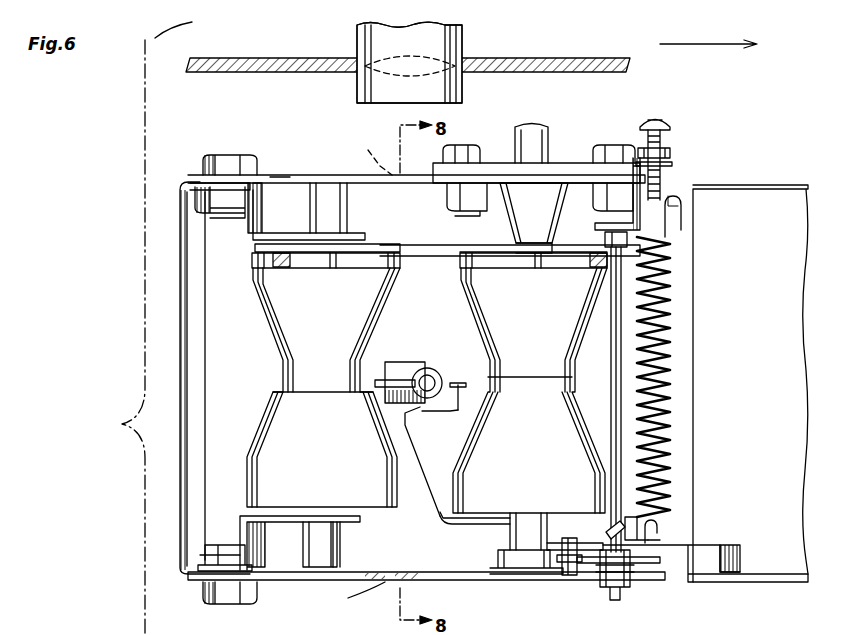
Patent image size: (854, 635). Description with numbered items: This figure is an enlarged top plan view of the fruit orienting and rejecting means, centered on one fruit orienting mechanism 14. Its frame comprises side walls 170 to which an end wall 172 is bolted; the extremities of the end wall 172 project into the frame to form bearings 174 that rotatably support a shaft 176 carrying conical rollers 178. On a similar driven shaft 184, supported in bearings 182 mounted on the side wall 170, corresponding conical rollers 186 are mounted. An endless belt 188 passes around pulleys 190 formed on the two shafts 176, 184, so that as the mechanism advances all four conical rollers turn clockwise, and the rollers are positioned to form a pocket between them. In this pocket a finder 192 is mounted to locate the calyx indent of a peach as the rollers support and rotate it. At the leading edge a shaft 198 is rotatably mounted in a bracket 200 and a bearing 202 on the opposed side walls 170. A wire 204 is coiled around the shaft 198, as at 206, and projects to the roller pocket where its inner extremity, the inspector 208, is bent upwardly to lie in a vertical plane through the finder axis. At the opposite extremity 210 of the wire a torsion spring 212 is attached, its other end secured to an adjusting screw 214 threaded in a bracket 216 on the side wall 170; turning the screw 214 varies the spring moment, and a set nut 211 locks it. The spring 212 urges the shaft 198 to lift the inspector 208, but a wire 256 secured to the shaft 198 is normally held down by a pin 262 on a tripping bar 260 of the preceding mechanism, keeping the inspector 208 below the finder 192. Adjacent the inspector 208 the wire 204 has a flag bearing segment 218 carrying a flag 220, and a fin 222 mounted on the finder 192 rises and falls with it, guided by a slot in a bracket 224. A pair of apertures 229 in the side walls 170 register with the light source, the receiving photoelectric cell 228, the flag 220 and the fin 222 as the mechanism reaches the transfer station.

The fruit orienting mechanism 14 is at (755, 179).
The side walls 170 is at (340, 176).
The end wall 172 is at (195, 378).
The bearings 174 is at (340, 233).
The shaft 176 is at (337, 552).
The conical rollers 178 is at (398, 302).
The bearings 182 is at (565, 183).
The driven shaft 184 is at (518, 130).
The conical rollers 186 is at (470, 312).
The endless belt 188 is at (433, 250).
The pulleys 190 is at (258, 268).
The finder 192 is at (440, 375).
The shaft 198 is at (668, 328).
The bracket 200 is at (642, 222).
The bearing 202 is at (628, 587).
The wire 204 is at (445, 530).
The coil 206 is at (622, 526).
The inspector 208 is at (458, 400).
The extremity of wire 210 is at (658, 536).
The set nut 211 is at (670, 153).
The torsion spring 212 is at (665, 368).
The adjusting screw 214 is at (670, 127).
The bracket 216 is at (672, 164).
The flag bearing segment 218 is at (438, 420).
The flag 220 is at (392, 398).
The fin 222 is at (403, 366).
The bracket 224 is at (440, 366).
The photoelectric cell 228 is at (462, 90).
The apertures 229 is at (357, 372).
The wire 256 is at (656, 564).
The tripping bar 260 is at (712, 546).
The pin 262 is at (568, 576).